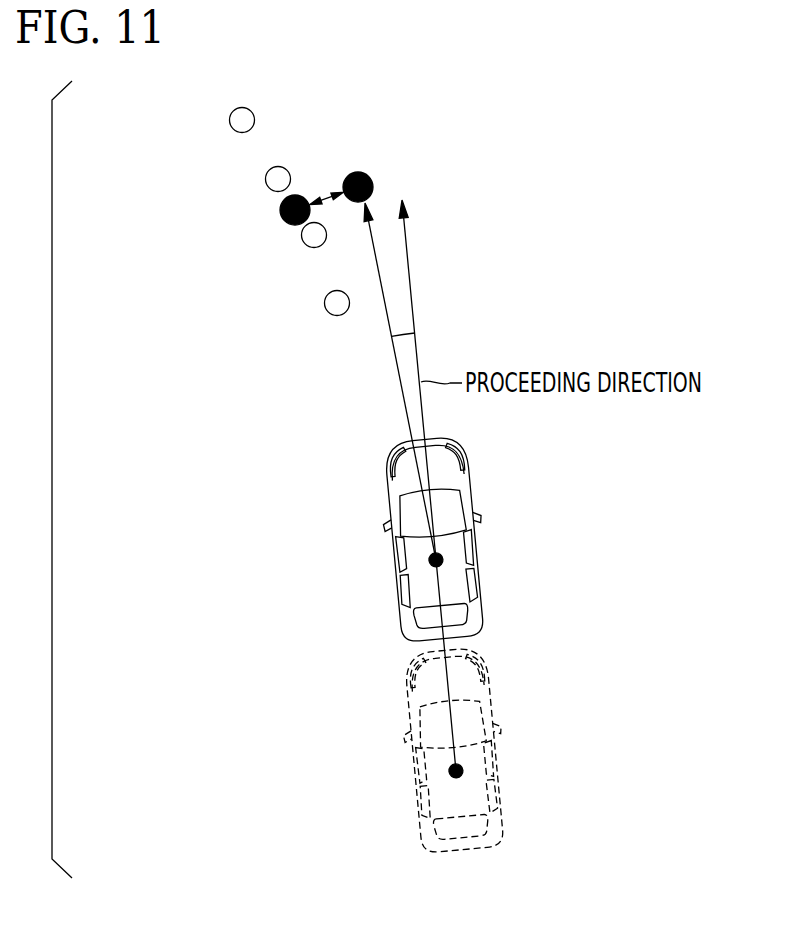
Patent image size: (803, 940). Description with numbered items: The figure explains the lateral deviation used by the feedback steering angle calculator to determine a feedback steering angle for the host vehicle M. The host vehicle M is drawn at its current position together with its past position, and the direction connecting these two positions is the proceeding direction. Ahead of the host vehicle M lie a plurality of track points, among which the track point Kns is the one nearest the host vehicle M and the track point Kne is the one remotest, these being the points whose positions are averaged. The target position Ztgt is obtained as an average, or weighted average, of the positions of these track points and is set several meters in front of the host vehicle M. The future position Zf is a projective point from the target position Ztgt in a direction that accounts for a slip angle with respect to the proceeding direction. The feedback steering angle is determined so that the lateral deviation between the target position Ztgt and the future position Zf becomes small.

The track point Kne is at (231, 129).
The track point Kns is at (326, 310).
The target position Ztgt is at (282, 220).
The future position Zf is at (359, 172).
The host vehicle M is at (476, 543).